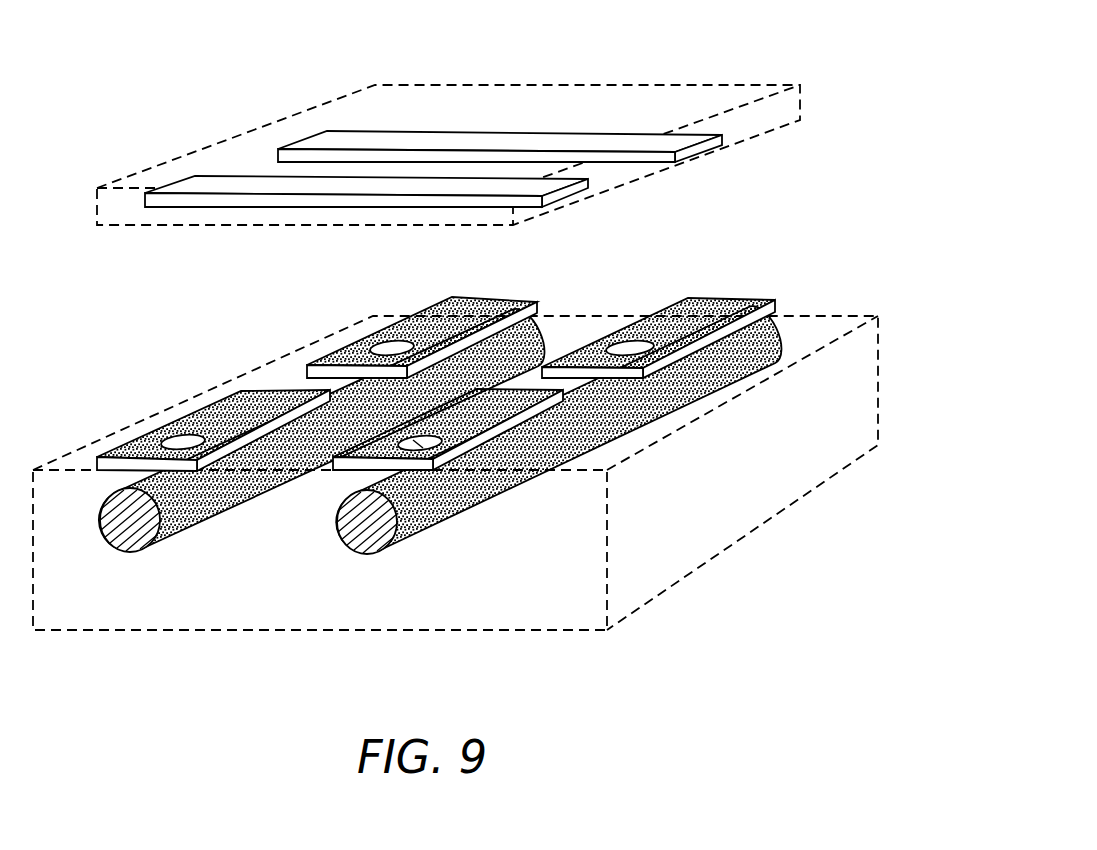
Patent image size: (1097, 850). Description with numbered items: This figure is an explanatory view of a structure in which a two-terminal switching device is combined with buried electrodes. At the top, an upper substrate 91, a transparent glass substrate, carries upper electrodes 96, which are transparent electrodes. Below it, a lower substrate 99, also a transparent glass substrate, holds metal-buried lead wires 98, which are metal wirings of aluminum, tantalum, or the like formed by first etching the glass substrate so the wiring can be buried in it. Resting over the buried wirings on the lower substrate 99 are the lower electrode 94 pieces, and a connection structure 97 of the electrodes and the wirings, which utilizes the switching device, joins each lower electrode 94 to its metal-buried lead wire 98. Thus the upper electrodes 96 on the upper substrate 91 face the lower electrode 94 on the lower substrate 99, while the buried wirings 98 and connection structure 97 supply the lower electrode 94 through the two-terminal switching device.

The upper substrate 91 is at (715, 85).
The upper electrodes 96 is at (685, 142).
The lower electrode 94 is at (740, 307).
The connection structure of the electrodes and the wirings 97 is at (417, 443).
The metal-buried lead wires 98 is at (782, 328).
The lower substrate 99 is at (567, 612).